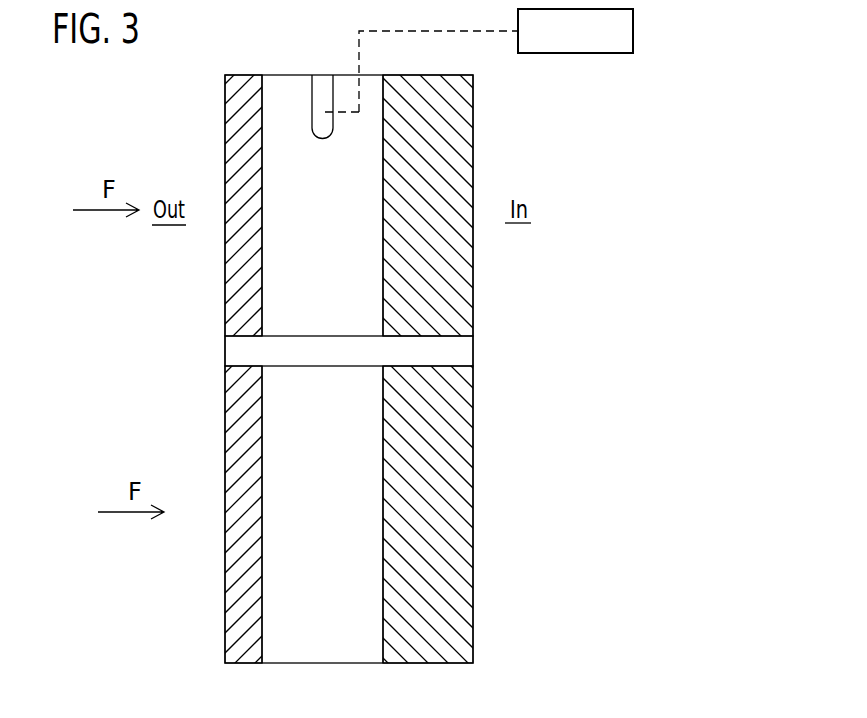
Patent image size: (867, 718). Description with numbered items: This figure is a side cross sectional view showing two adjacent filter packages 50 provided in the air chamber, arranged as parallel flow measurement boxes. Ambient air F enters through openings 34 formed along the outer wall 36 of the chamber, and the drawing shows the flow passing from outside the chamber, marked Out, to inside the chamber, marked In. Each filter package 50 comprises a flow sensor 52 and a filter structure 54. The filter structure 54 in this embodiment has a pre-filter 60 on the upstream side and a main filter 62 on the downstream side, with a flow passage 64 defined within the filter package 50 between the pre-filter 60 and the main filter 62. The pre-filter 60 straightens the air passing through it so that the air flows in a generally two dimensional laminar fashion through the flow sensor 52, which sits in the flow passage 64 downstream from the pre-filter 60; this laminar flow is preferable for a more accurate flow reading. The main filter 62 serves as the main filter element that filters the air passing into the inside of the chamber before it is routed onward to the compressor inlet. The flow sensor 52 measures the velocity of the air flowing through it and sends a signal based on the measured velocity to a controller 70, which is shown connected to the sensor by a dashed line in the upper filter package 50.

The opening 34 is at (303, 75).
The outer wall 36 is at (242, 351).
The filter package 50 is at (167, 151).
The flow sensor 52 is at (321, 138).
The filter structure 54 is at (255, 220).
The pre-filter 60 is at (242, 272).
The main filter 62 is at (457, 140).
The flow passage 64 is at (333, 255).
The controller 70 is at (634, 24).